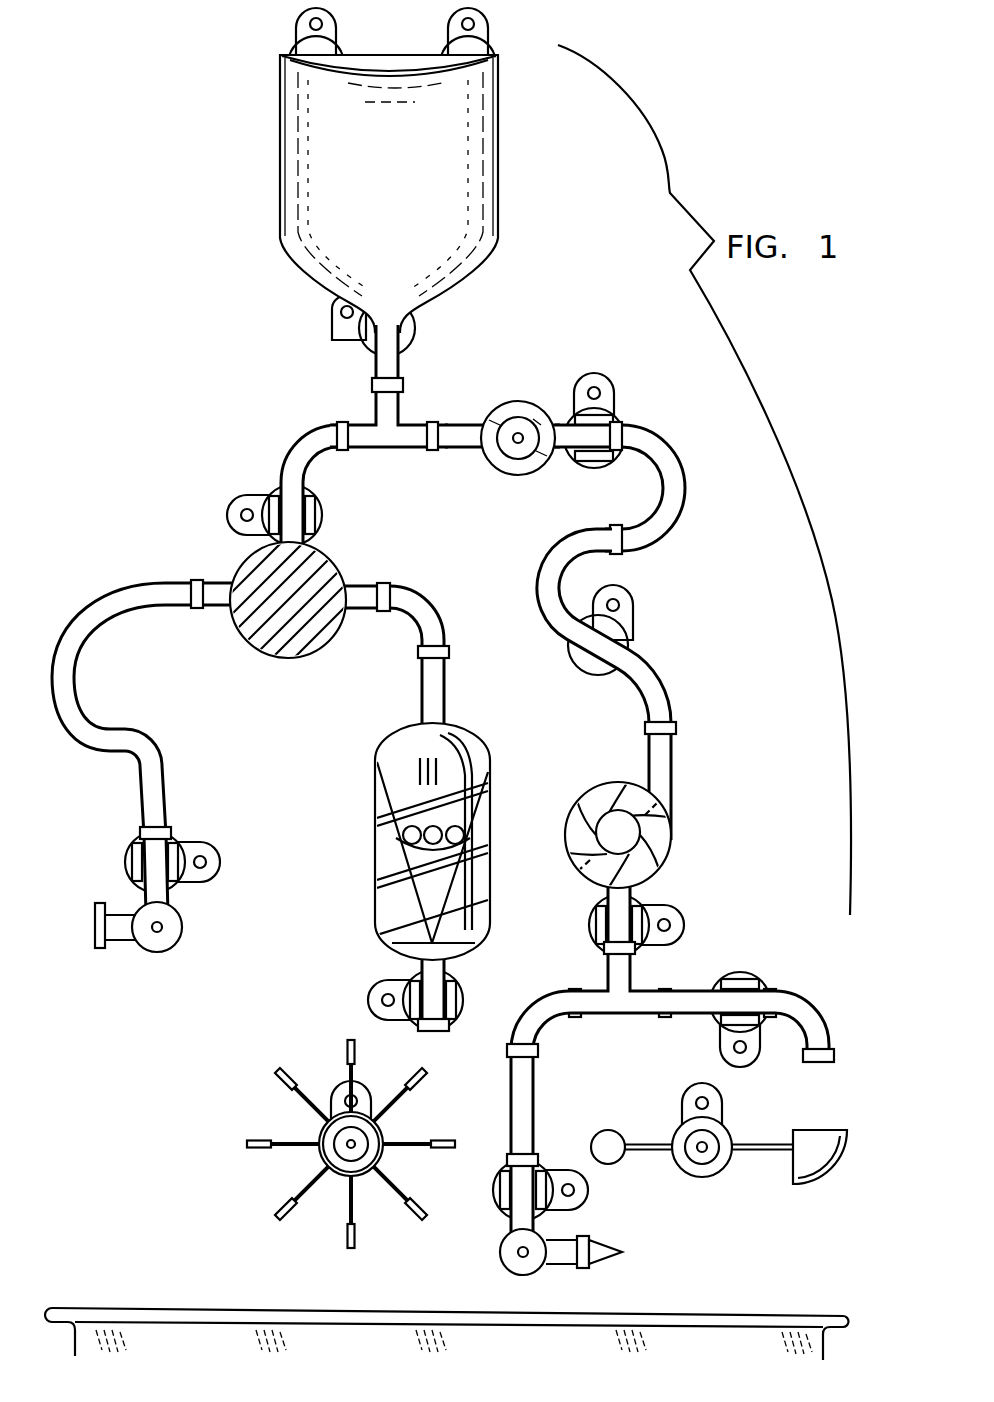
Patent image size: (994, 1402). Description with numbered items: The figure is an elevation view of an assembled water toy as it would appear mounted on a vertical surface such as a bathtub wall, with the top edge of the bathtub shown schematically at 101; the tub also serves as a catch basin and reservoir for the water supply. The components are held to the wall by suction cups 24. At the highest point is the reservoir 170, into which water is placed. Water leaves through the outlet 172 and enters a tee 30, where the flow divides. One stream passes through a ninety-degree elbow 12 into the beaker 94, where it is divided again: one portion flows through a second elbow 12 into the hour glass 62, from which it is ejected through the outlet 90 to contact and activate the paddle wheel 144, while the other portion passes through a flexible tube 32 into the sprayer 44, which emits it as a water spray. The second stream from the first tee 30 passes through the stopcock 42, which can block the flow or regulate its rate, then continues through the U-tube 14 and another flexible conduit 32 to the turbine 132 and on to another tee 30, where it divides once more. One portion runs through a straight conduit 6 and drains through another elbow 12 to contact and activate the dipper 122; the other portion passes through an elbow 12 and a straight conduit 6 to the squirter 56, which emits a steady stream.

The straight conduit 6 is at (695, 990).
The 90° elbow 12 is at (298, 443).
The U-tube 14 is at (685, 490).
The suction cups 24 is at (290, 42).
The tee 30 is at (372, 412).
The flexible tube 32 is at (92, 603).
The stopcock 42 is at (517, 402).
The sprayer 44 is at (162, 950).
The squirter 56 is at (500, 1260).
The hour glass 62 is at (385, 745).
The outlet 90 is at (417, 965).
The beaker 94 is at (268, 652).
The top edge of bathtub 101 is at (123, 1308).
The dipper 122 is at (688, 1163).
The turbine 132 is at (595, 785).
The paddle wheel 144 is at (330, 1190).
The reservoir 170 is at (280, 205).
The outlet 172 is at (372, 352).